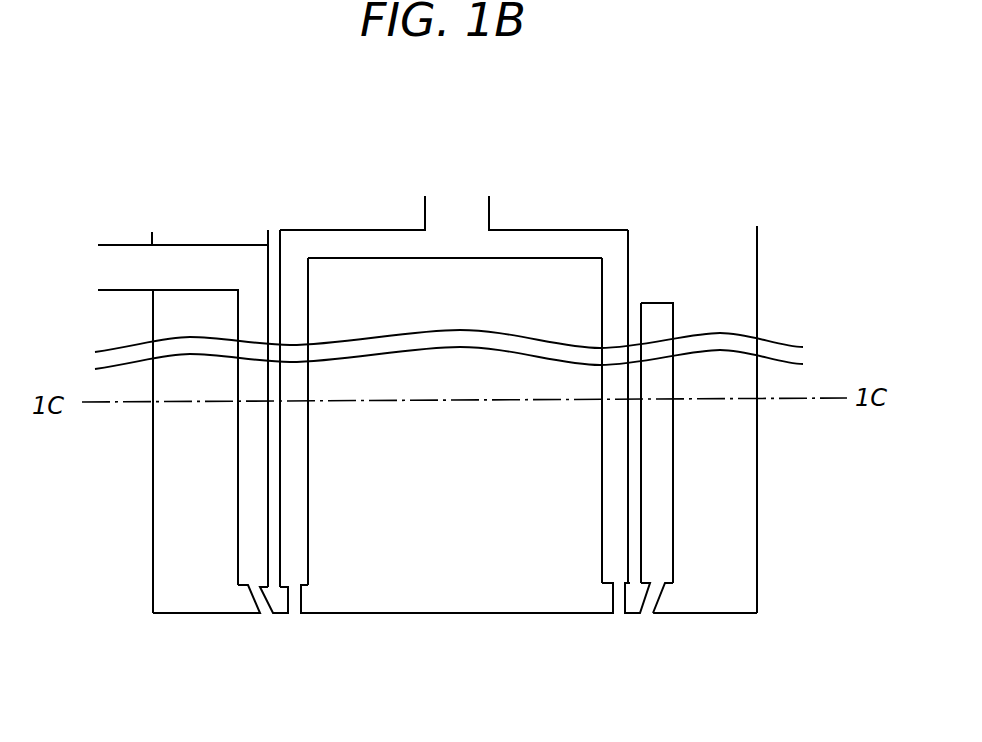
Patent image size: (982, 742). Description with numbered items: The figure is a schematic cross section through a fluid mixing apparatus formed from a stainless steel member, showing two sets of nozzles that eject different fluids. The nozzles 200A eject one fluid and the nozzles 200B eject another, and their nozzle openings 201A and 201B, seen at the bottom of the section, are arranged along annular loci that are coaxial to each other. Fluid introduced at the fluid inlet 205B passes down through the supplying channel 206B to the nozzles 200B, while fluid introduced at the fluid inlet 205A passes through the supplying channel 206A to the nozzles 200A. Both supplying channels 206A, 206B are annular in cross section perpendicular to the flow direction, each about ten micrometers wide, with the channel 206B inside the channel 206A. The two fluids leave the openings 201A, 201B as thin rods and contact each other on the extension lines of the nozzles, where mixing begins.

The nozzle 200A is at (257, 606).
The nozzle 200B is at (302, 602).
The nozzle opening 201A is at (268, 617).
The nozzle opening 201B is at (297, 618).
The fluid inlet 205A is at (127, 264).
The fluid inlet 205B is at (457, 213).
The supplying channel 206A is at (252, 462).
The supplying channel 206B is at (295, 462).